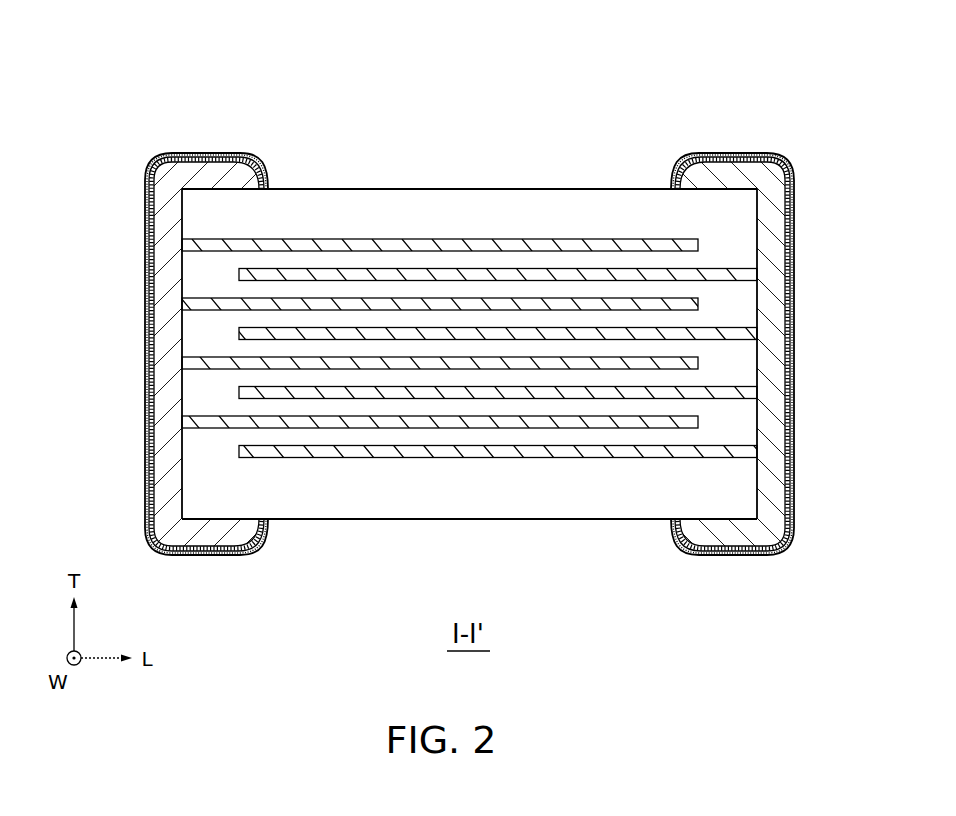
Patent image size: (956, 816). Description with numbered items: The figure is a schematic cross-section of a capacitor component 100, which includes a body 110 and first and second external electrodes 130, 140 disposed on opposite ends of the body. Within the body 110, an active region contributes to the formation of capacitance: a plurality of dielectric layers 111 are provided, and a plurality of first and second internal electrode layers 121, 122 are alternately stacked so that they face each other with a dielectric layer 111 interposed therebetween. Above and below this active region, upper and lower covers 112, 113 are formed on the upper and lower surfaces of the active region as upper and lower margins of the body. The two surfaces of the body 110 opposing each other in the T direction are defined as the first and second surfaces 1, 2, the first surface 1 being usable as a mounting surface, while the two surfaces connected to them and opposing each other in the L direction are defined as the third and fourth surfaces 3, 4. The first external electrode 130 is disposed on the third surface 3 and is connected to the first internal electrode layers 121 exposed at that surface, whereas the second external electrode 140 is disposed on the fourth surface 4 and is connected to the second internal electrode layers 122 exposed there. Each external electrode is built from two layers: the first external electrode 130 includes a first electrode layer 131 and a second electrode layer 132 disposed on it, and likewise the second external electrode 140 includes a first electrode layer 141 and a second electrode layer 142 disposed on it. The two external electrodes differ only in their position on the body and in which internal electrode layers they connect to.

The capacitor component 100 is at (439, 80).
The body 110 is at (472, 336).
The dielectric layer 111 is at (460, 260).
The upper cover 112 is at (386, 189).
The lower cover 113 is at (370, 500).
The first internal electrode layer 121 is at (525, 248).
The second internal electrode layer 122 is at (623, 270).
The first external electrode 130 is at (320, 399).
The first electrode layer 131 is at (210, 540).
The second electrode layer 132 is at (233, 608).
The second external electrode 140 is at (627, 399).
The first electrode layer 141 is at (727, 537).
The second electrode layer 142 is at (707, 608).
The first surface 1 is at (319, 521).
The second surface 2 is at (318, 189).
The third surface 3 is at (181, 463).
The fourth surface 4 is at (758, 471).